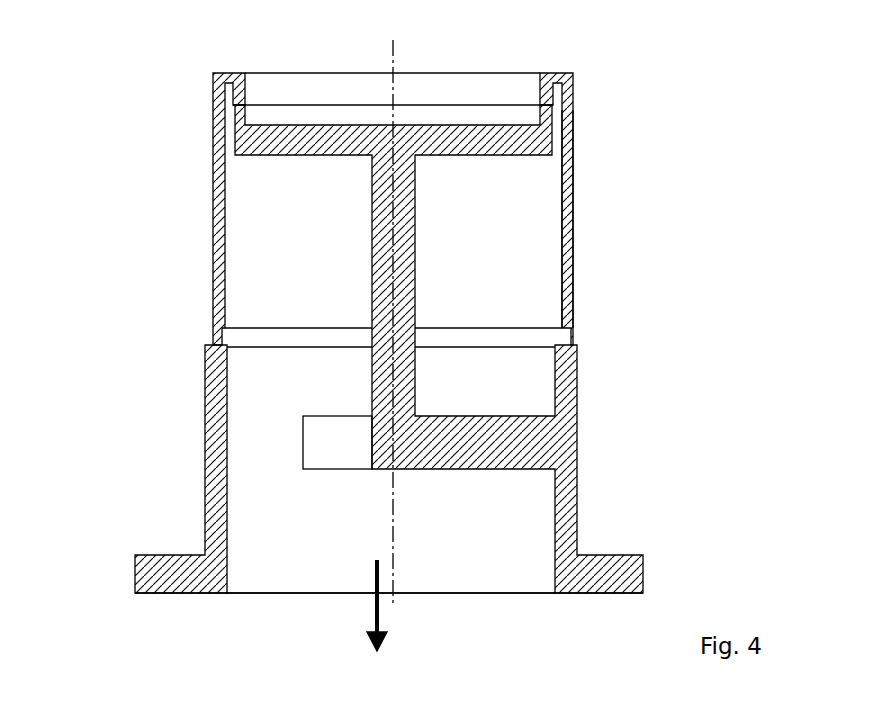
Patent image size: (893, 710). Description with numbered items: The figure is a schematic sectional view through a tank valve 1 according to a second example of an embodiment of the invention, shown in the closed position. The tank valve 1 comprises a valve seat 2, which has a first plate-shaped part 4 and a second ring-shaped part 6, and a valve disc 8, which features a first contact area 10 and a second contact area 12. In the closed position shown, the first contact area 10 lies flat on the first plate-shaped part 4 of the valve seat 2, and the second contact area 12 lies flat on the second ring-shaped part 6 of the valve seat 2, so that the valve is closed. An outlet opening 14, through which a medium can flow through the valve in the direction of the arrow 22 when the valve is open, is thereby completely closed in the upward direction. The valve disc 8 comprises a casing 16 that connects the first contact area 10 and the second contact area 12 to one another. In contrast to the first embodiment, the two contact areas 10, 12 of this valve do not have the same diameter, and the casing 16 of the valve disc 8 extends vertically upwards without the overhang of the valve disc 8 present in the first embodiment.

The tank valve 1 is at (153, 95).
The valve seat 2 is at (556, 454).
The first plate-shaped part 4 is at (422, 137).
The second ring-shaped part 6 is at (567, 340).
The valve disc 8 is at (570, 141).
The first contact area 10 is at (548, 100).
The second contact area 12 is at (573, 287).
The outlet opening 14 is at (488, 597).
The casing 16 is at (568, 192).
The arrow 22 is at (373, 600).